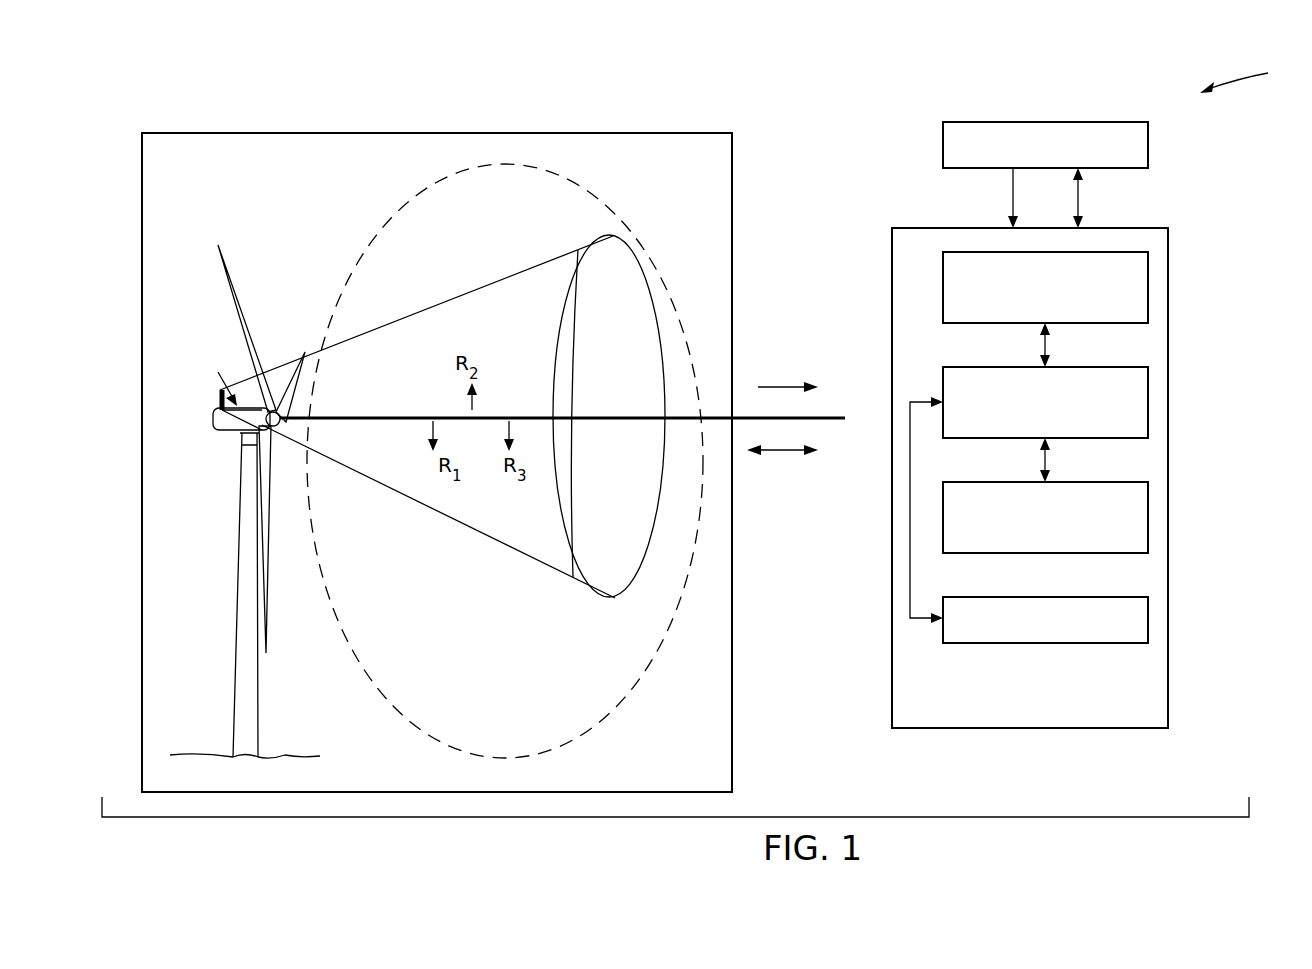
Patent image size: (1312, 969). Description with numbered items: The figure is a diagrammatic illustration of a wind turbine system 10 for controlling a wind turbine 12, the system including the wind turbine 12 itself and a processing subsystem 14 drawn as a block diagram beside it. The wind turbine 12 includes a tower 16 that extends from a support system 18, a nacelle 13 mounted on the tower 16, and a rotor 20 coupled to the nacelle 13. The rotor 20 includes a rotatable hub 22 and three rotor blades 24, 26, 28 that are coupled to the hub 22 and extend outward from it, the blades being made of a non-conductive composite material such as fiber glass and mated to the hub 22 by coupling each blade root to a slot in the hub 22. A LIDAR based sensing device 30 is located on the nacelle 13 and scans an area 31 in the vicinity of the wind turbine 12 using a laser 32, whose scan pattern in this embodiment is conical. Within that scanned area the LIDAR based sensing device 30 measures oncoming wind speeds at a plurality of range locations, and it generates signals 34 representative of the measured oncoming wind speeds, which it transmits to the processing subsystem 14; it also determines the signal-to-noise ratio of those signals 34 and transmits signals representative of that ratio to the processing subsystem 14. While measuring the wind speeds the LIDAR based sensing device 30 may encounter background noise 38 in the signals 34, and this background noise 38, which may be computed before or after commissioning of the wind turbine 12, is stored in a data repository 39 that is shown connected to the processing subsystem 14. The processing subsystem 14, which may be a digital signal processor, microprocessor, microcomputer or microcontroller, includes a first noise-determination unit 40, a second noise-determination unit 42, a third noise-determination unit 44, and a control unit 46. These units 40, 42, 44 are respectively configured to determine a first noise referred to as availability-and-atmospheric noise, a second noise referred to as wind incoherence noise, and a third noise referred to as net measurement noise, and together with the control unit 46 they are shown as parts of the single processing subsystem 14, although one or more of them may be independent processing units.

The wind turbine system 10 is at (1247, 75).
The wind turbine 12 is at (614, 133).
The nacelle 13 is at (214, 426).
The processing subsystem 14 is at (1169, 681).
The tower 16 is at (240, 695).
The support system 18 is at (285, 755).
The rotor 20 is at (215, 377).
The rotatable hub 22 is at (278, 426).
The rotor blade 24 is at (230, 279).
The rotor blade 26 is at (269, 625).
The rotor blade 28 is at (288, 372).
The LIDAR based sensing device 30 is at (219, 403).
The area 31 is at (509, 692).
The laser 32 is at (474, 306).
The signals representative of the measured oncoming wind speeds 34 is at (782, 386).
The background noise 38 is at (1010, 203).
The data repository 39 is at (1150, 140).
The first noise-determination unit 40 is at (1150, 282).
The second noise-determination unit 42 is at (1150, 513).
The third noise-determination unit 44 is at (1150, 398).
The control unit 46 is at (1150, 615).